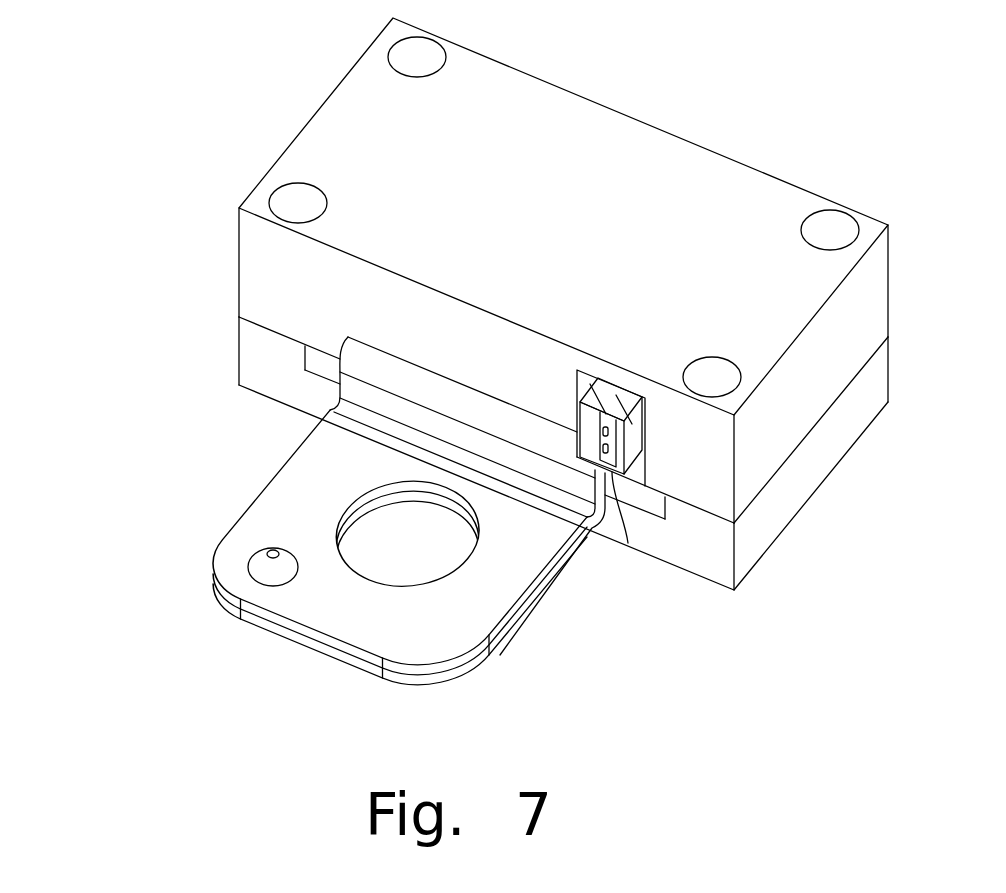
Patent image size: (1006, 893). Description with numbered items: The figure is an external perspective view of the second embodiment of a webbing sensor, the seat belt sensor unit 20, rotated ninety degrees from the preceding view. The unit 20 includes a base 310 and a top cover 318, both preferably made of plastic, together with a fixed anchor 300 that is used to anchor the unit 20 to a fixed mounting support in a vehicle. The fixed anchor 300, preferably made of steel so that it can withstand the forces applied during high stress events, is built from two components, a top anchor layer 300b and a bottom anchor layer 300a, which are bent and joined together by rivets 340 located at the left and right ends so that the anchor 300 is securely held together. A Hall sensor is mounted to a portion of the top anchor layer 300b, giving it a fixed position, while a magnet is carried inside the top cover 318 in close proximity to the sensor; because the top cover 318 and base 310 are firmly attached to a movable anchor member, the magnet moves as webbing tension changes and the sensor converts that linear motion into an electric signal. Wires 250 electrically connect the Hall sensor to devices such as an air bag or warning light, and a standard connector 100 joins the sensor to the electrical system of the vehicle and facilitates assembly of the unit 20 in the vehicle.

The seat belt sensor unit 20 is at (125, 140).
The connector 100 is at (632, 448).
The wires 250 is at (628, 543).
The fixed anchor 300 is at (368, 545).
The bottom anchor layer 300a is at (523, 628).
The top anchor layer 300b is at (262, 513).
The base 310 is at (892, 372).
The top cover 318 is at (896, 281).
The rivets 340 is at (257, 570).